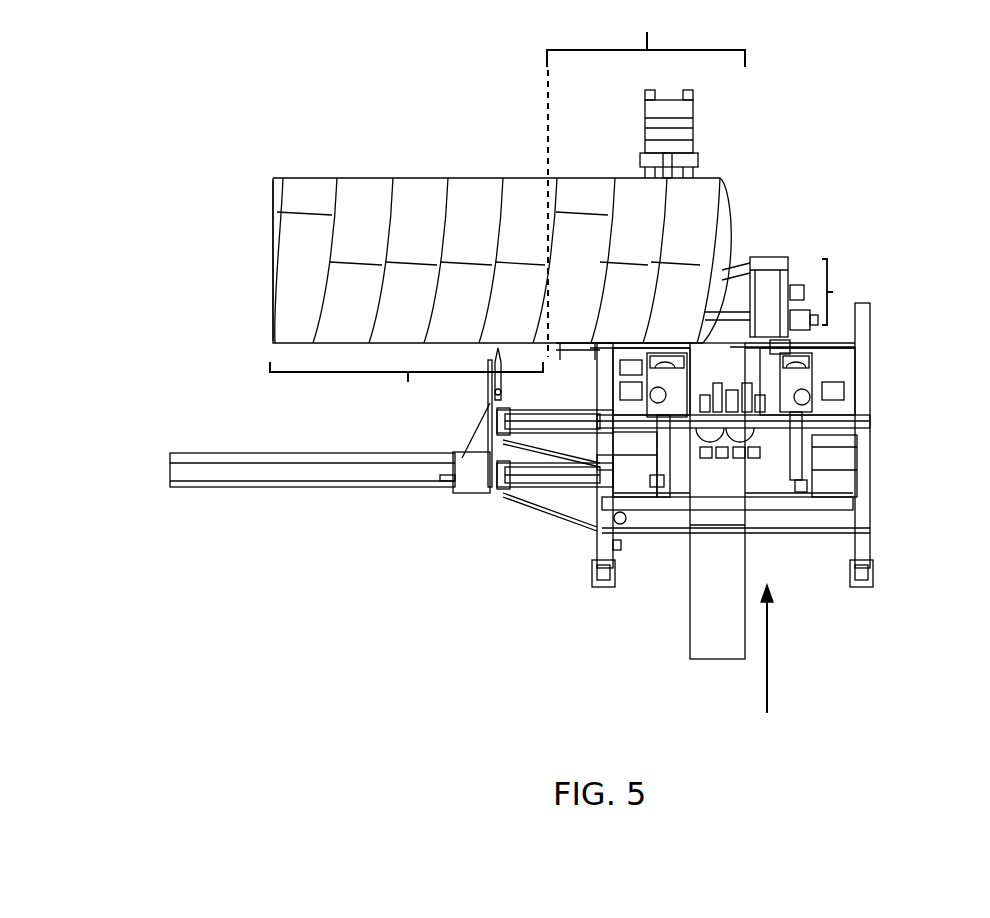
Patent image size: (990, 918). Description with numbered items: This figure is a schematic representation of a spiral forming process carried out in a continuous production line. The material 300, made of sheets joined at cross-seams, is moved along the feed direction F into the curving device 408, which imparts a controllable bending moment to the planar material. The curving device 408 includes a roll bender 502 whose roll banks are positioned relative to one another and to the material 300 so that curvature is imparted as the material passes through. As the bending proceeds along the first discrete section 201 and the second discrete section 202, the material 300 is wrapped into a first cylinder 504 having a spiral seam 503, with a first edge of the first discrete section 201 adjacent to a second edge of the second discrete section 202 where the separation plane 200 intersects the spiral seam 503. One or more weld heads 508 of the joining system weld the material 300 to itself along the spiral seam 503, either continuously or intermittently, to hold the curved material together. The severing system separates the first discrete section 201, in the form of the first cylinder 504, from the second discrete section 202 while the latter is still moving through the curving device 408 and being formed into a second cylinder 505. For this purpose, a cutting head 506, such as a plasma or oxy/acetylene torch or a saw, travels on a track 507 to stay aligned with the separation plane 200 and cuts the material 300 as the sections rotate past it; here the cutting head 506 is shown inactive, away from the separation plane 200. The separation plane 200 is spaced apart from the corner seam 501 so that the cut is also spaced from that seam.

The separation plane 200 is at (548, 100).
The first discrete section 201 is at (406, 387).
The second discrete section 202 is at (646, 36).
The material 300 is at (712, 614).
The curving device 408 is at (851, 292).
The corner seam 501 is at (541, 262).
The roll bender 502 is at (733, 318).
The spiral seam 503 is at (538, 307).
The first cylinder 504 is at (297, 177).
The second cylinder 505 is at (713, 174).
The cutting head 506 is at (505, 387).
The track 507 is at (313, 480).
The weld head 508 is at (680, 165).
The feed direction F is at (777, 649).